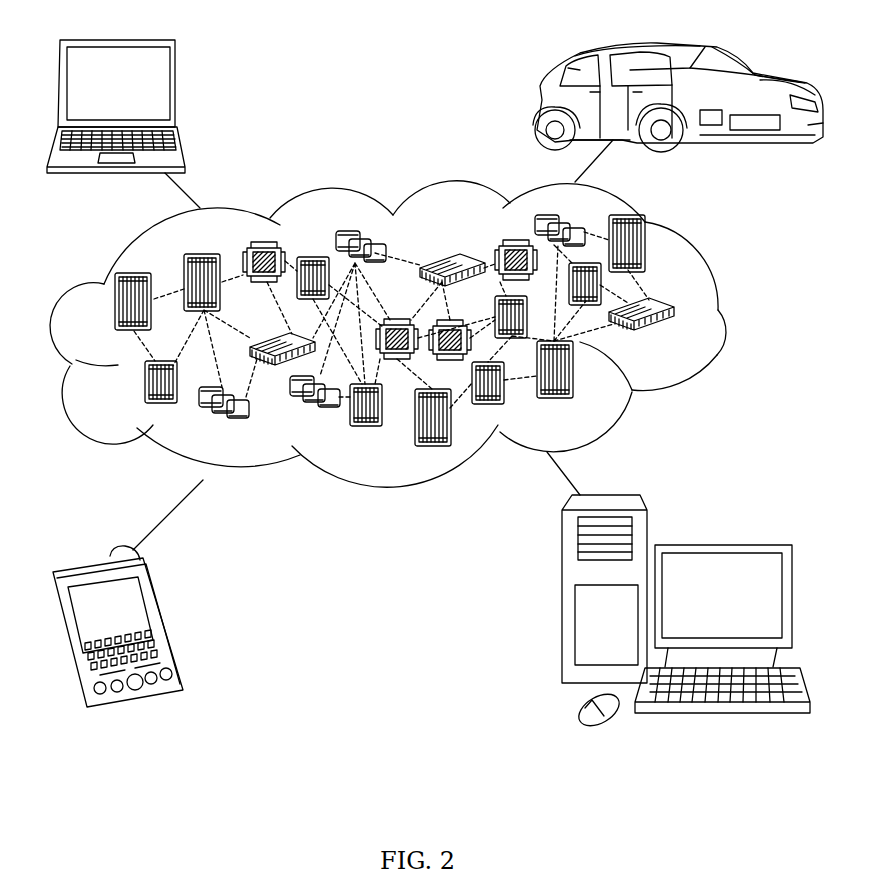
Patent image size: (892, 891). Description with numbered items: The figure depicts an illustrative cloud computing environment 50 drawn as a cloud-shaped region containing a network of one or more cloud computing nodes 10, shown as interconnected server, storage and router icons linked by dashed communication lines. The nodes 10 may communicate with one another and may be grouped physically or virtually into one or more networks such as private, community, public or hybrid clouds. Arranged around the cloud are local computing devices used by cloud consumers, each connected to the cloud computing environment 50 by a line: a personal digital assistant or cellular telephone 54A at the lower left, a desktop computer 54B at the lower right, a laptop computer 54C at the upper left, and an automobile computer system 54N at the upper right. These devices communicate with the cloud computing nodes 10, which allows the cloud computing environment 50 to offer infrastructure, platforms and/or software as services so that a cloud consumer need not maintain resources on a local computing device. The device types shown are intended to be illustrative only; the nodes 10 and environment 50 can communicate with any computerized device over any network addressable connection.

The cloud computing nodes 10 is at (675, 337).
The cloud computing environment 50 is at (718, 310).
The personal digital assistant (PDA) or cellular telephone 54A is at (167, 617).
The desktop computer 54B is at (720, 545).
The laptop computer 54C is at (175, 90).
The automobile computer system 54N is at (542, 100).